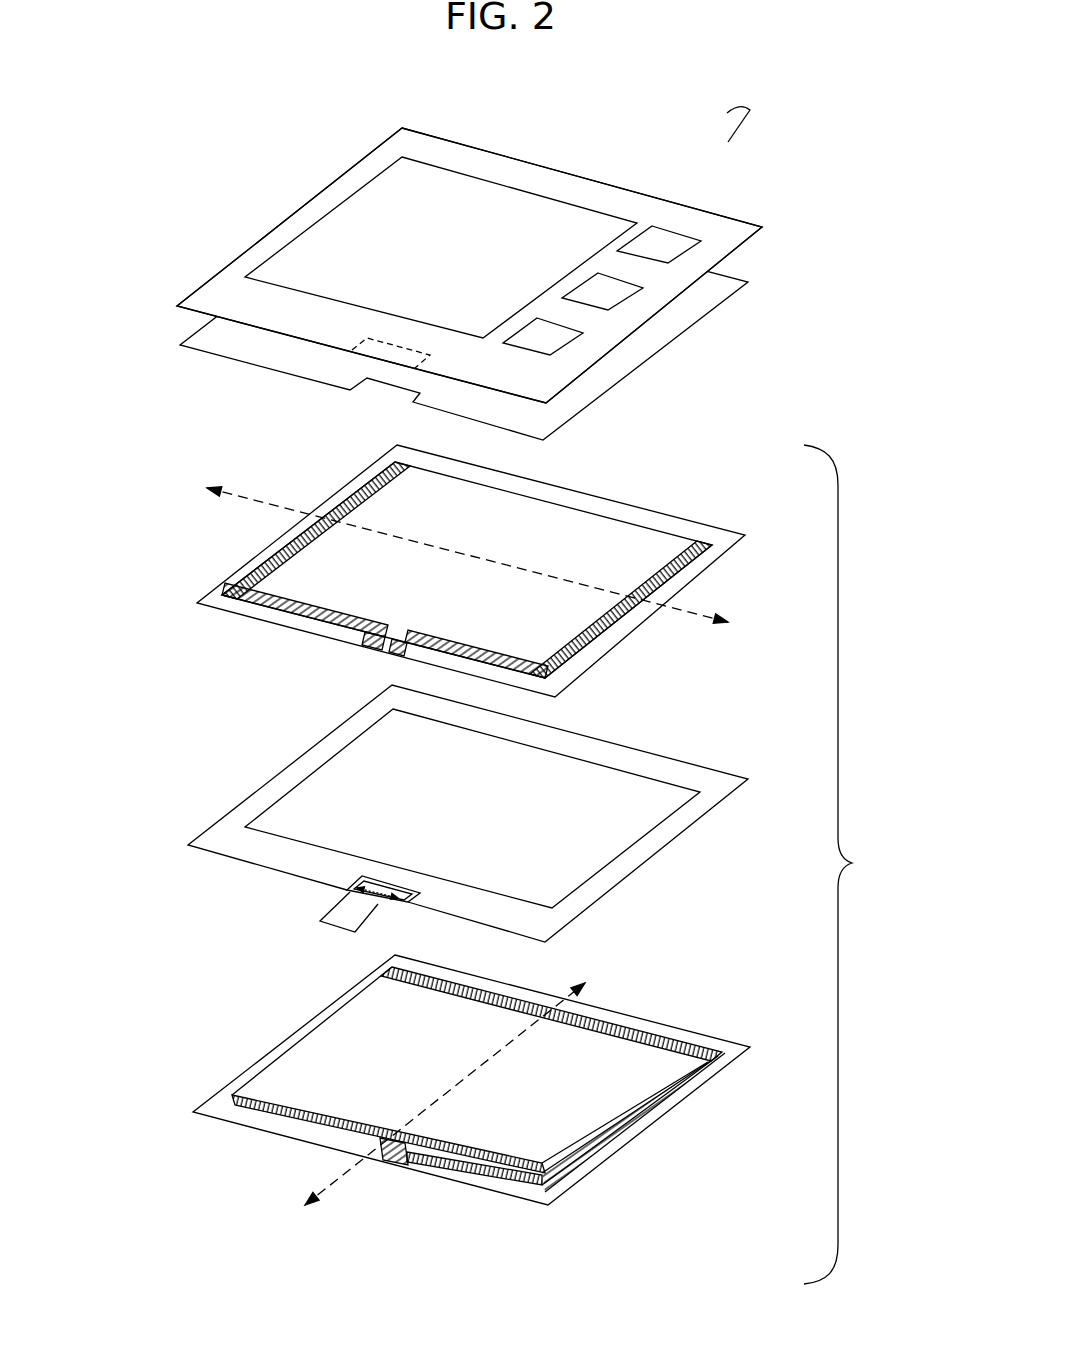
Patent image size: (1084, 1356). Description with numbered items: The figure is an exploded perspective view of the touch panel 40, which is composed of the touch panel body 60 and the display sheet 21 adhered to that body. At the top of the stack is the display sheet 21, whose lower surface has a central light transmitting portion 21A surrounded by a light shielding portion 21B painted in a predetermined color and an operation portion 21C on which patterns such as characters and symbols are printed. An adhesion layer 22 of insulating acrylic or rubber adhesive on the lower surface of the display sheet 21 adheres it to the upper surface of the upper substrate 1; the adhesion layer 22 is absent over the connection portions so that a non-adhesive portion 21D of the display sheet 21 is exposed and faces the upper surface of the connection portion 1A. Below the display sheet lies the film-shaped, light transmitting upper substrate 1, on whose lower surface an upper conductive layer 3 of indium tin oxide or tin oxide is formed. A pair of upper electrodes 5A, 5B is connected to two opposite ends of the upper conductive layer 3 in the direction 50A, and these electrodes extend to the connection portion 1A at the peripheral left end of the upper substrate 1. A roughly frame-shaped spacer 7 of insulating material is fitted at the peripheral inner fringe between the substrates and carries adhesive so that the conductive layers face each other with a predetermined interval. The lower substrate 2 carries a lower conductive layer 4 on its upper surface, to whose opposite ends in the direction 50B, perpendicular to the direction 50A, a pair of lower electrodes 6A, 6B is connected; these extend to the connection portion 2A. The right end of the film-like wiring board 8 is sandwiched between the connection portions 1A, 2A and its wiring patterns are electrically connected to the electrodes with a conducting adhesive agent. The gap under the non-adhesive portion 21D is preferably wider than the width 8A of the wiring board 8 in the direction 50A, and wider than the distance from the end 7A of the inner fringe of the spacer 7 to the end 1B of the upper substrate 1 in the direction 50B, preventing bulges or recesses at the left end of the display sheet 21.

The upper substrate 1 is at (703, 523).
The connection portion 1A is at (363, 639).
The end of upper substrate 1B is at (383, 647).
The lower substrate 2 is at (733, 1063).
The connection portion 2A is at (387, 1157).
The upper conductive layer 3 is at (597, 548).
The lower conductive layer 4 is at (593, 1093).
The upper electrode 5A is at (687, 568).
The upper electrode 5B is at (270, 555).
The lower electrode 6A is at (275, 1108).
The lower electrode 6B is at (670, 1040).
The spacer 7 is at (680, 835).
The end of inner fringe of spacer 7A is at (407, 867).
The wiring board 8 is at (333, 930).
The width of wiring board 8A is at (377, 897).
The display sheet 21 is at (202, 282).
The light transmitting portion 21A is at (317, 250).
The light shielding portion 21B is at (586, 193).
The operation portion 21C is at (651, 294).
The non-adhesive portion 21D is at (387, 363).
The adhesion layer 22 is at (200, 352).
The touch panel 40 is at (750, 106).
The direction 50A is at (670, 603).
The direction 50B is at (343, 1173).
The touch panel body 60 is at (855, 864).